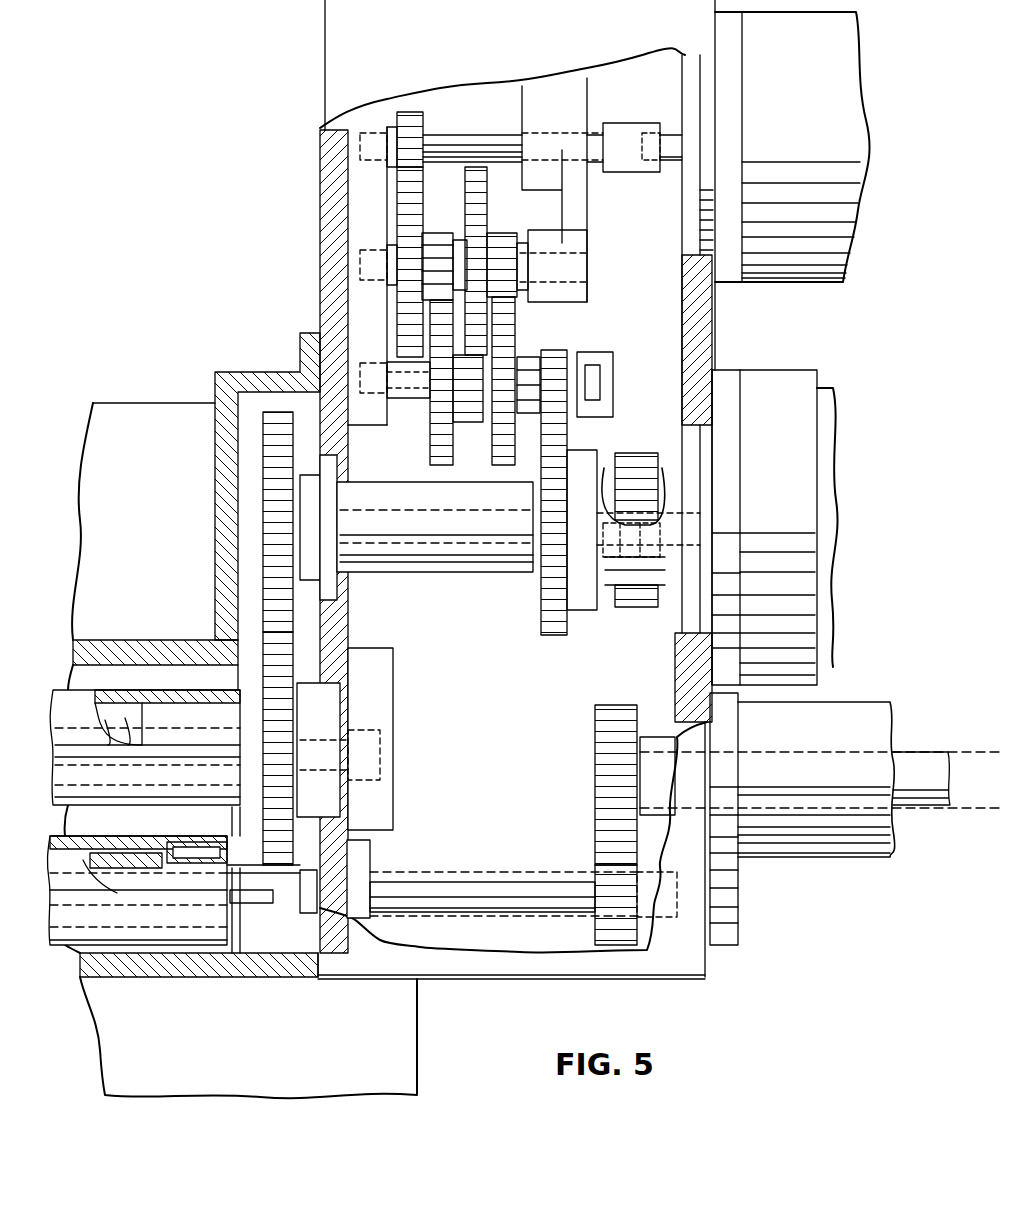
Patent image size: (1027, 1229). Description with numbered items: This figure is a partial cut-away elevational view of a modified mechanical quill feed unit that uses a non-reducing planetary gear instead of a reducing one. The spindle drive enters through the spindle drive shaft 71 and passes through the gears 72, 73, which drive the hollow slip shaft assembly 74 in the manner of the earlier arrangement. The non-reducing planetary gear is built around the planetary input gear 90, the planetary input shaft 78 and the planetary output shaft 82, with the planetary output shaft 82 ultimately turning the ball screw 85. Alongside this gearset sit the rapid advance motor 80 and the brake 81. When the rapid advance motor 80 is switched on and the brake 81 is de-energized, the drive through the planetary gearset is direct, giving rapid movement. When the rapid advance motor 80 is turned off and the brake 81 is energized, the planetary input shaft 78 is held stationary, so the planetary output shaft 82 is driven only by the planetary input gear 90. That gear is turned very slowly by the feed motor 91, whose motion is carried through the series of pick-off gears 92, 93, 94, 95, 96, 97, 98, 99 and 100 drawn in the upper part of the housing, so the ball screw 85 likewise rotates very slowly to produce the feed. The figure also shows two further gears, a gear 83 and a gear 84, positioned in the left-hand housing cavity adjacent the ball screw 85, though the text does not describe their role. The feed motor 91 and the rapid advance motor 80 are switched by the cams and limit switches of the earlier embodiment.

The spindle drive shaft 71 is at (923, 806).
The gear 72 is at (595, 730).
The gear 73 is at (597, 860).
The hollow slip shaft assembly 74 is at (165, 836).
The planetary input shaft 78 is at (695, 520).
The rapid advance motor 80 is at (836, 388).
The brake 81 is at (771, 370).
The planetary output shaft 82 is at (496, 546).
The gear 83 is at (262, 592).
The gear 84 is at (262, 660).
The ball screw 85 is at (104, 690).
The planetary input gear 90 is at (541, 633).
The feed motor 91 is at (860, 52).
The pick-off gear 92 is at (423, 118).
The pick-off gear 93 is at (420, 197).
The pick-off gear 94 is at (436, 237).
The pick-off gear 95 is at (430, 452).
The pick-off gear 96 is at (473, 422).
The pick-off gear 97 is at (486, 216).
The pick-off gear 98 is at (508, 233).
The pick-off gear 99 is at (516, 324).
The pick-off gear 100 is at (560, 350).